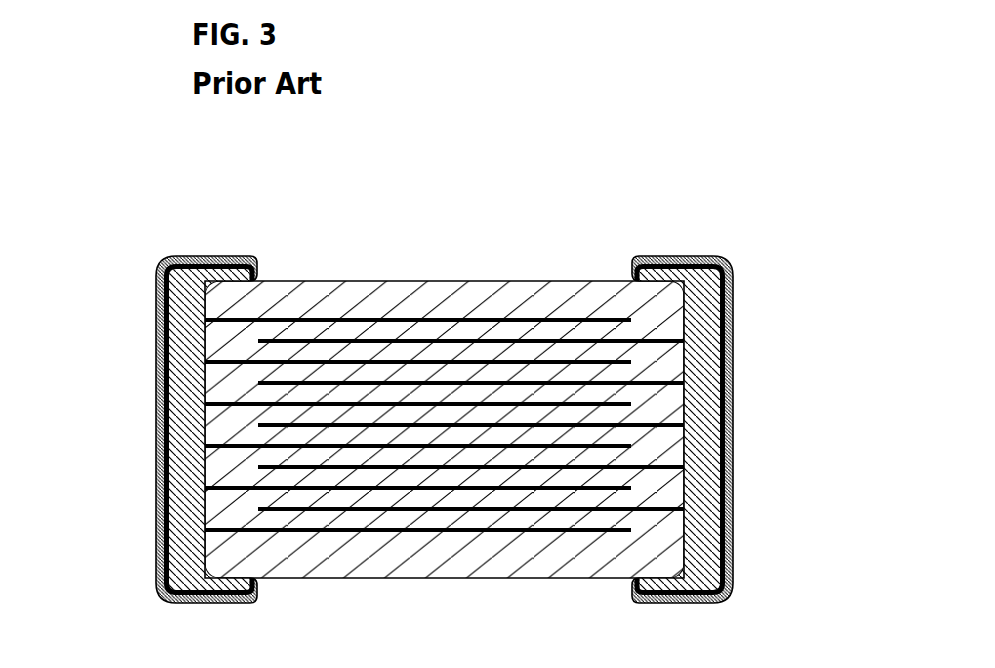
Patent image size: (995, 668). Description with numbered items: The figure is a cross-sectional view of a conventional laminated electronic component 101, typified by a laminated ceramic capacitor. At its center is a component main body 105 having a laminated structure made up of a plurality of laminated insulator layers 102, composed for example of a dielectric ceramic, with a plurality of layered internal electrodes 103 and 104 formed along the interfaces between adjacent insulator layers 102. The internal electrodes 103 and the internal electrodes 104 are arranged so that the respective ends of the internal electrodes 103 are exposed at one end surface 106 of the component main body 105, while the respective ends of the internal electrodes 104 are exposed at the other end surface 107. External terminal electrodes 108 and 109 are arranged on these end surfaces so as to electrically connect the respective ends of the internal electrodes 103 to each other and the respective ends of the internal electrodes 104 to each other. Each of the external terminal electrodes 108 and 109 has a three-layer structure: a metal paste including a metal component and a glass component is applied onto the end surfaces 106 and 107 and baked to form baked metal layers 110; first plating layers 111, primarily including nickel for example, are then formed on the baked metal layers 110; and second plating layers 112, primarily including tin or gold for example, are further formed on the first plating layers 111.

The laminated electronic component 101 is at (277, 176).
The insulator layers 102 is at (468, 347).
The internal electrodes 103 is at (386, 359).
The internal electrodes 104 is at (548, 383).
The component main body 105 is at (595, 279).
The end surface 106 is at (163, 456).
The end surface 107 is at (718, 450).
The external terminal electrode 108 is at (140, 429).
The external terminal electrode 109 is at (749, 429).
The baked metal layers 110 is at (187, 321).
The first plating layer 111 is at (165, 359).
The second plating layer 112 is at (158, 397).